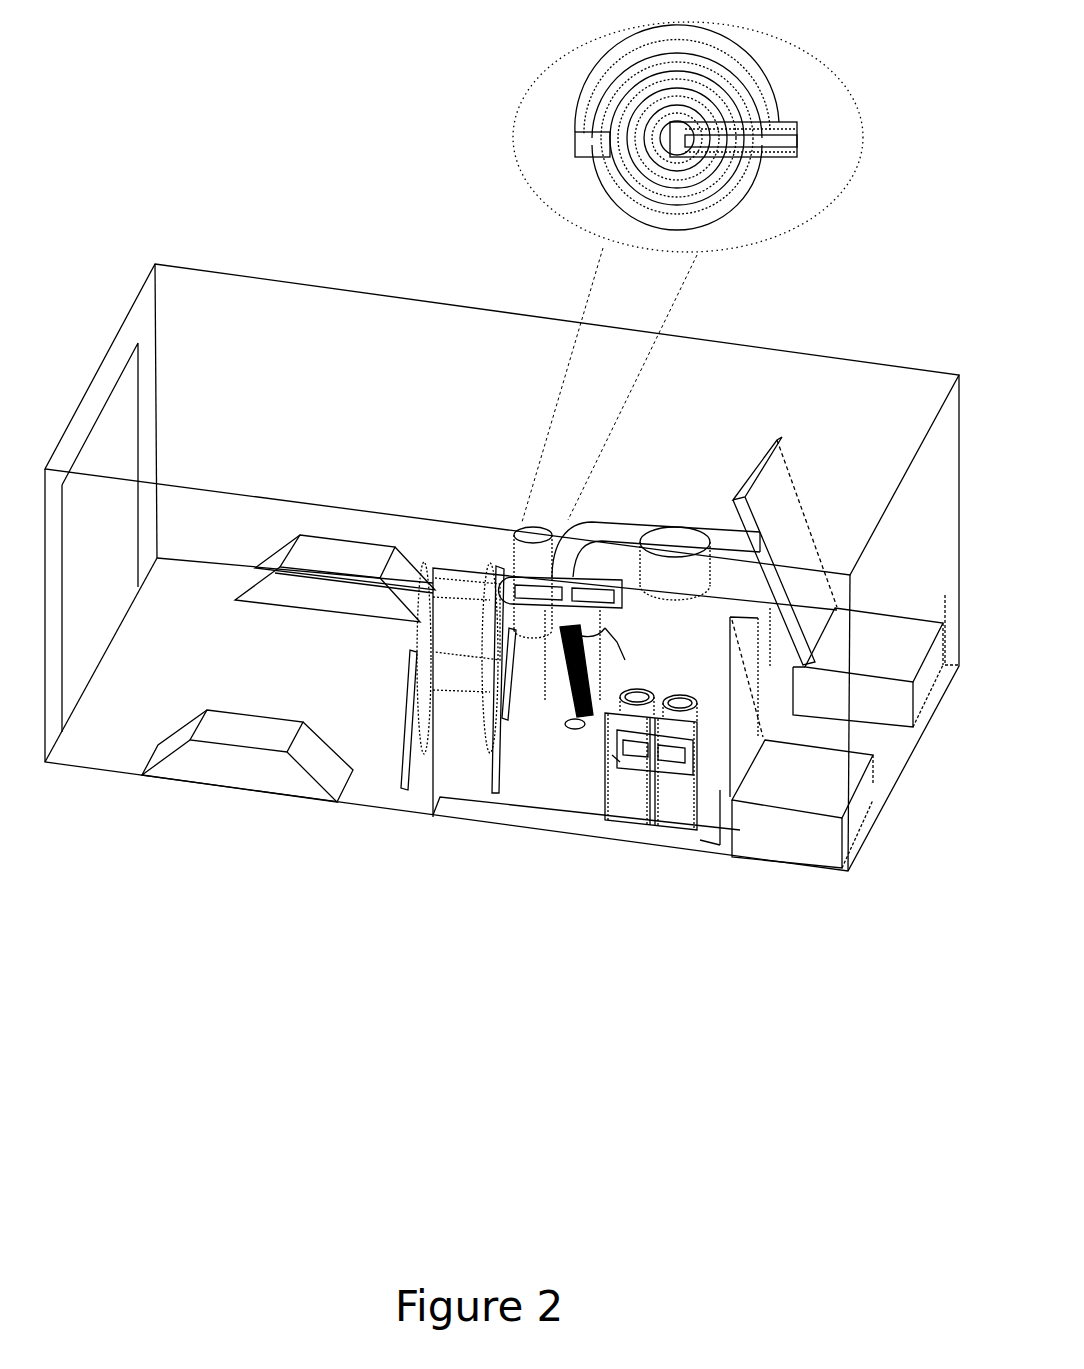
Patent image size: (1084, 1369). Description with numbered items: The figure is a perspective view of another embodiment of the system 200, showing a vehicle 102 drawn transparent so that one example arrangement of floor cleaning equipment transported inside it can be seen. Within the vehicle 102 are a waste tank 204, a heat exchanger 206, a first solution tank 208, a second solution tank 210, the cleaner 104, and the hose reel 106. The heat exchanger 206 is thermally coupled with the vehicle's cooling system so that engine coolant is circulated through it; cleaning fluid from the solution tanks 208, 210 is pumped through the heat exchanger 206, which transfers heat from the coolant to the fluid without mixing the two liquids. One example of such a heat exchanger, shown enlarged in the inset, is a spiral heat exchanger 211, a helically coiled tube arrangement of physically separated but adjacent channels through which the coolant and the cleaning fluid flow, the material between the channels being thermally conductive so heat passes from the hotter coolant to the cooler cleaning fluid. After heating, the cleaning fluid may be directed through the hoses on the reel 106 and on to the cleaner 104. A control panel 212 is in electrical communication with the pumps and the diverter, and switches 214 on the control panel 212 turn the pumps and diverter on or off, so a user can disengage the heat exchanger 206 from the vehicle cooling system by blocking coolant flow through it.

The system 200 is at (138, 92).
The vehicle 102 is at (507, 308).
The cleaner 104 is at (575, 716).
The hose reel 106 is at (410, 634).
The waste tank 204 is at (622, 521).
The heat exchanger 206 is at (522, 521).
The first solution tank 208 is at (627, 808).
The second solution tank 210 is at (670, 808).
The spiral heat exchanger 211 is at (758, 75).
The control panel 212 is at (615, 760).
The switches 214 is at (640, 757).